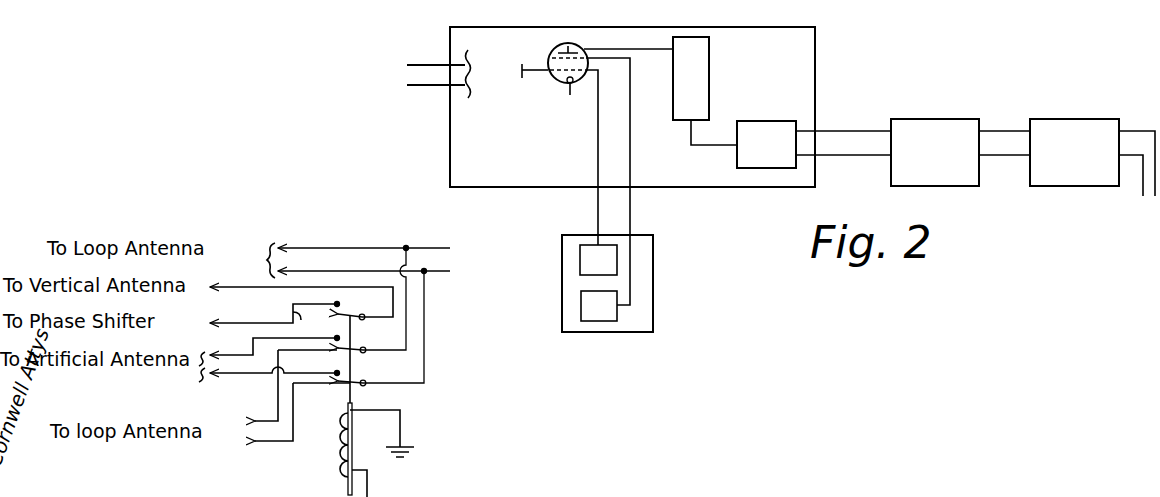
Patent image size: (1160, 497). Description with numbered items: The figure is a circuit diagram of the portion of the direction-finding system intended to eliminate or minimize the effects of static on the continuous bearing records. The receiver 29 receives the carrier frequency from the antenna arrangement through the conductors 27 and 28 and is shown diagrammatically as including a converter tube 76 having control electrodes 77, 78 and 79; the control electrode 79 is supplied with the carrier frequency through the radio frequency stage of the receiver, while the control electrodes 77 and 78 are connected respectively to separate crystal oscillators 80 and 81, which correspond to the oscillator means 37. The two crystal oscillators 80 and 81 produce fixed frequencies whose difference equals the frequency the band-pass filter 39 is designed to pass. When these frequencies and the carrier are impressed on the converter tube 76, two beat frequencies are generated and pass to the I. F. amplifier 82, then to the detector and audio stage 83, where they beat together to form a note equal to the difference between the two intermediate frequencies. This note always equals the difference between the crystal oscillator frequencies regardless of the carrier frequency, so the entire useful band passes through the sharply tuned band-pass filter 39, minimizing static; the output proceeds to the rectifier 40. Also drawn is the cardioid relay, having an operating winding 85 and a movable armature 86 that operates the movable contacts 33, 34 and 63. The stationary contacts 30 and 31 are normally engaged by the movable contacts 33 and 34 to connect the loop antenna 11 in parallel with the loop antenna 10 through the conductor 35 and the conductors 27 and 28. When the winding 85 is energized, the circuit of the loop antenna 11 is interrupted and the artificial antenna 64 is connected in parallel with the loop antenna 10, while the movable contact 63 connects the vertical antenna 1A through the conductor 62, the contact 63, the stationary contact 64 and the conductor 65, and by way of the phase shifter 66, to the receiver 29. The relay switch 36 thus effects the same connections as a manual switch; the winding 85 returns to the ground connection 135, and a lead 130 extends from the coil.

The loop antenna 10 is at (232, 249).
The loop antenna 11 is at (281, 396).
The vertical antenna 1A is at (291, 297).
The conductor 27 is at (422, 85).
The conductor 28 is at (417, 65).
The receiver 29 is at (785, 27).
The stationary contact 30 is at (275, 383).
The stationary contact 31 is at (275, 346).
The movable contact 33 is at (360, 374).
The movable contact 34 is at (362, 341).
The conductor 35 is at (424, 372).
The switch 36 is at (407, 340).
The oscillator means 37 is at (653, 291).
The band-pass filter 39 is at (960, 119).
The rectifier 40 is at (1066, 119).
The conductor 62 is at (277, 289).
The movable contact 63 is at (358, 305).
The stationary contact 64 is at (337, 303).
The conductor 65 is at (302, 324).
The phase shifter 66 is at (255, 318).
The converter tube 76 is at (560, 46).
The control electrode 77 is at (578, 50).
The control electrode 78 is at (565, 65).
The control electrode 79 is at (562, 74).
The crystal oscillator 80 is at (581, 310).
The crystal oscillator 81 is at (580, 257).
The I. F. amplifier 82 is at (700, 37).
The detector and audio stage 83 is at (790, 121).
The operating winding 85 is at (340, 447).
The armature 86 is at (348, 408).
The lead 130 is at (383, 483).
The ground connection 135 is at (410, 447).